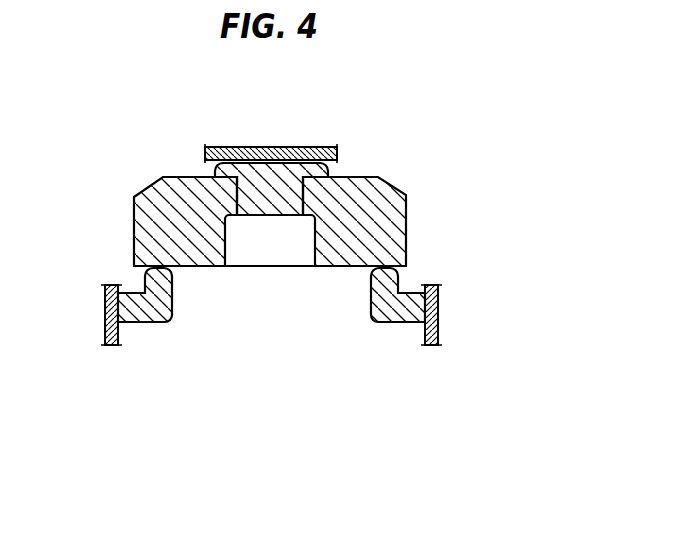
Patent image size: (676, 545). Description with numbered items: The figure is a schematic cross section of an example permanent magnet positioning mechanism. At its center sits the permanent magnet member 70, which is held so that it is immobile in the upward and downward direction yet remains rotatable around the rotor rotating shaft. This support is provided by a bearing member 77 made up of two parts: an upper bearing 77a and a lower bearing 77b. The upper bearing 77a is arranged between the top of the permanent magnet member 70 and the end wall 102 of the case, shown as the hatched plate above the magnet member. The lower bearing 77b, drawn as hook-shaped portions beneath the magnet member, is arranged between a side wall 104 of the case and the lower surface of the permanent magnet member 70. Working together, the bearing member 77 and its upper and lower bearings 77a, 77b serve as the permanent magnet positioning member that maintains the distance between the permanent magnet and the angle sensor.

The permanent magnet member 70 is at (405, 213).
The end wall of the case 102 is at (258, 147).
The bearing member 77 is at (275, 235).
The upper bearing 77a is at (303, 163).
The lower bearing 77b is at (146, 322).
The side wall of the case 104 is at (104, 316).